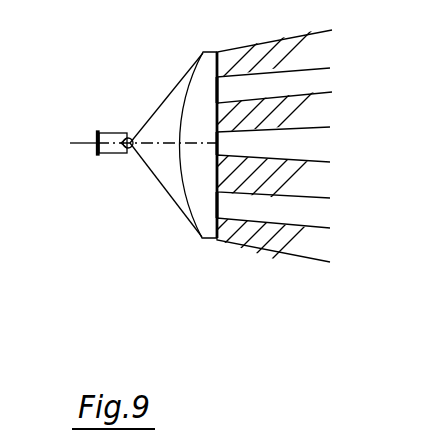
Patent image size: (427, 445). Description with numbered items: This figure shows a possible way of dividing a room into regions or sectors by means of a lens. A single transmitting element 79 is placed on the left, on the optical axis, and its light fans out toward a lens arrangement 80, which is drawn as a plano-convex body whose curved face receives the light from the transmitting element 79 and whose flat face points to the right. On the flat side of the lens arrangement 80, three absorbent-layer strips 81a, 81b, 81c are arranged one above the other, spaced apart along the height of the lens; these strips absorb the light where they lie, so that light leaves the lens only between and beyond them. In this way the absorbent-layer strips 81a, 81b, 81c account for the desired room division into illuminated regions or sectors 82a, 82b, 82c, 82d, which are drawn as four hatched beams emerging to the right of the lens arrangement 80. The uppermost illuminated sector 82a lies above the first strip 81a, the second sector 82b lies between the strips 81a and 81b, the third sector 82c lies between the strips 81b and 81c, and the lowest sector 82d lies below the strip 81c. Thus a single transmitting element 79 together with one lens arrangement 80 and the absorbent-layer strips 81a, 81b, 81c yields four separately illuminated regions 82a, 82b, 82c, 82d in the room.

The transmitting element 79 is at (110, 150).
The lens arrangement 80 is at (204, 57).
The absorbent-layer strip 81a is at (220, 90).
The absorbent-layer strip 81b is at (220, 145).
The absorbent-layer strip 81c is at (220, 203).
The illuminated region or sector 82a is at (213, 150).
The illuminated region or sector 82b is at (213, 150).
The illuminated region or sector 82c is at (213, 150).
The illuminated region or sector 82d is at (213, 150).